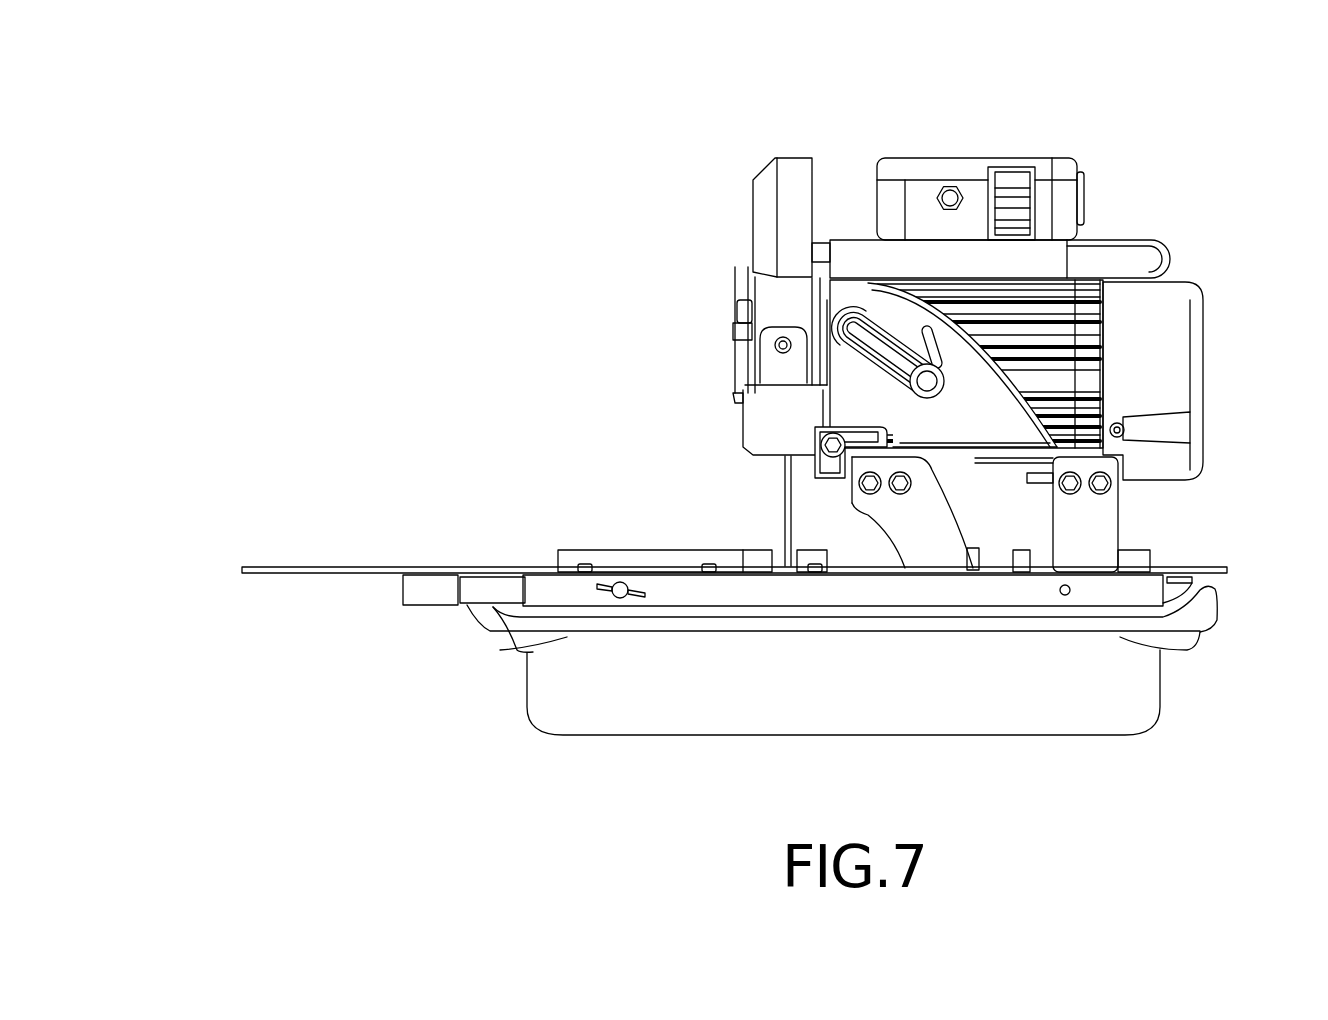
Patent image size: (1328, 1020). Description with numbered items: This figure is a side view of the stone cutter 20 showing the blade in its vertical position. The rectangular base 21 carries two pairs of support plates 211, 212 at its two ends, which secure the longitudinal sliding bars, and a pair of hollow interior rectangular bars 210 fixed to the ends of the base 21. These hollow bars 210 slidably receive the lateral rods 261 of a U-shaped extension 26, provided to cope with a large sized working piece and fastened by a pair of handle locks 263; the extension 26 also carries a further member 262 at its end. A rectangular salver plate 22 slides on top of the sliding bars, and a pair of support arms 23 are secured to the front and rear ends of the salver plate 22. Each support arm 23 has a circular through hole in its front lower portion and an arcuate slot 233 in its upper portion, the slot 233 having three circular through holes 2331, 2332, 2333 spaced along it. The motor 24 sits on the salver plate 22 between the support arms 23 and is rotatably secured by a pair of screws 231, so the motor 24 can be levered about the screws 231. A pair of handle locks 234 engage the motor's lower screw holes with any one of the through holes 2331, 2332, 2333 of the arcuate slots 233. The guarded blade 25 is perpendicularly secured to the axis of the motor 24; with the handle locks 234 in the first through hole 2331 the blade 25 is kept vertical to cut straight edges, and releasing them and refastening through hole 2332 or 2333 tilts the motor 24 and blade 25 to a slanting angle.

The stone cutter 20 is at (478, 348).
The rectangular base 21 is at (1087, 699).
The salver plate 22 is at (814, 624).
The support arms 23 is at (845, 379).
The motor 24 is at (921, 172).
The guarded blade 25 is at (787, 531).
The U-shaped extension 26 is at (734, 597).
The hollow interior rectangular bars 210 is at (550, 588).
The support plates 211 is at (887, 513).
The support plates 212 is at (1108, 532).
The screws 231 is at (822, 447).
The arcuate slot 233 is at (973, 244).
The handle locks 234 is at (933, 358).
The lateral rod 261 is at (483, 594).
The stop block 262 is at (410, 598).
The handle locks 263 is at (619, 583).
The circular through hole 2331 is at (945, 383).
The circular through hole 2332 is at (905, 332).
The circular through hole 2333 is at (830, 323).